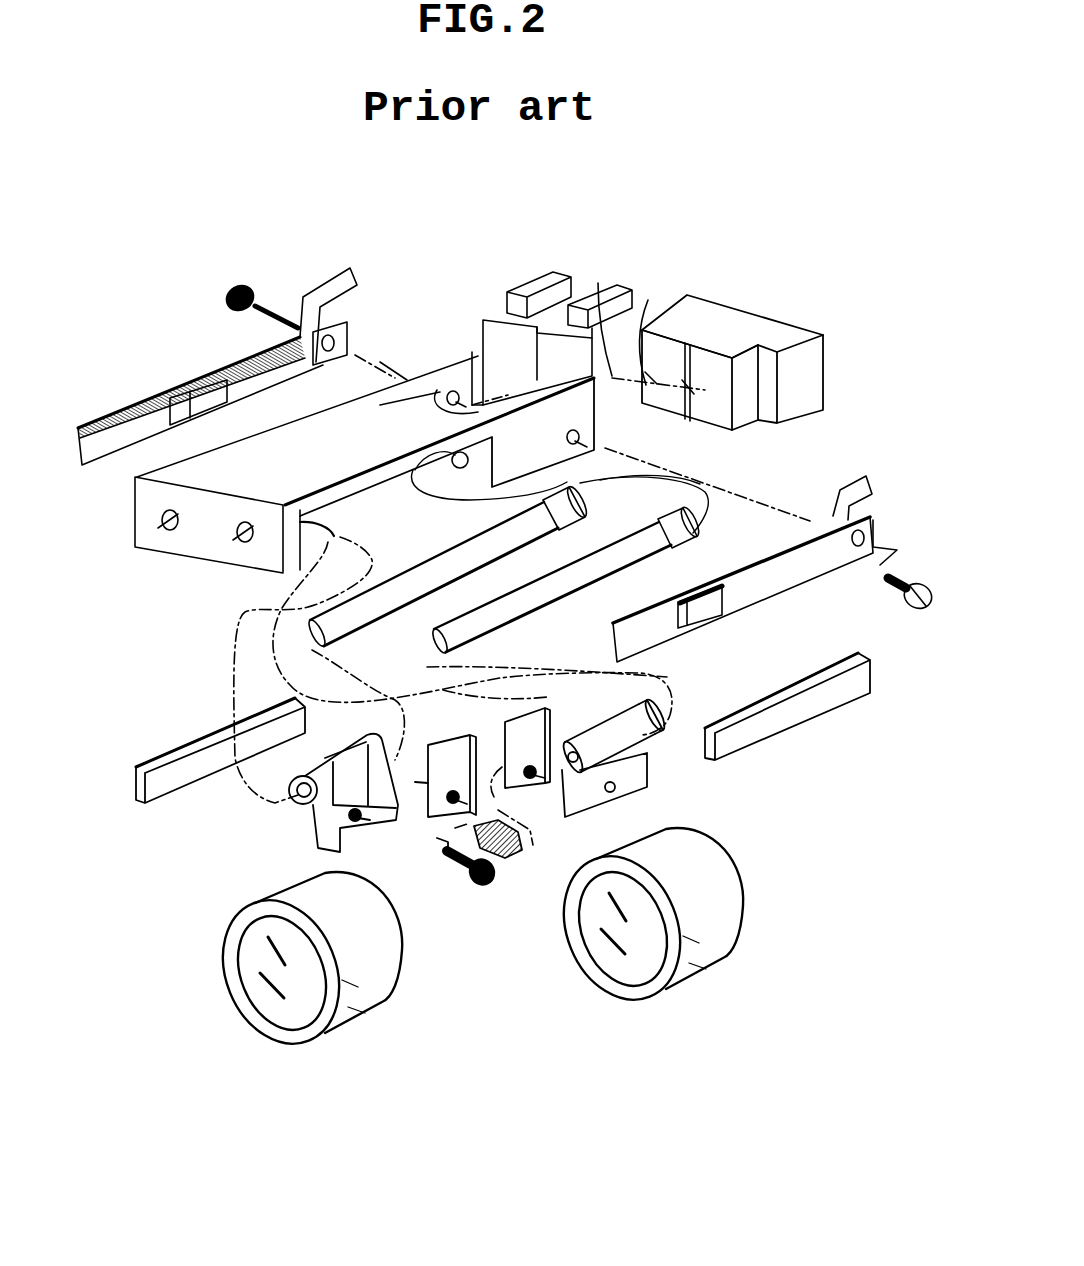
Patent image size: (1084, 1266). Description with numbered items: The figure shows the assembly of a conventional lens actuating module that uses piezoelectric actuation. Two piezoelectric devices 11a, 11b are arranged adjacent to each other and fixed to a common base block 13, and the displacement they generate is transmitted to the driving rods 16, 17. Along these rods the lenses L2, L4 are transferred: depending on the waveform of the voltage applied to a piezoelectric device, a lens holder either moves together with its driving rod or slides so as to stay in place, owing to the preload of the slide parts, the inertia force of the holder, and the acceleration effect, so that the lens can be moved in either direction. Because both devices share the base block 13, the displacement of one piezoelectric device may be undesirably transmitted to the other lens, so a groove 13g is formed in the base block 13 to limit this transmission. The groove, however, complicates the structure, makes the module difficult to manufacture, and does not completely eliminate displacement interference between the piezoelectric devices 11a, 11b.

The piezoelectric device 11a is at (522, 283).
The piezoelectric device 11b is at (598, 280).
The base block 13 is at (783, 328).
The groove 13g is at (705, 335).
The driving rod 16 is at (258, 613).
The driving rod 17 is at (693, 533).
The lens L2 is at (372, 992).
The lens L4 is at (713, 948).